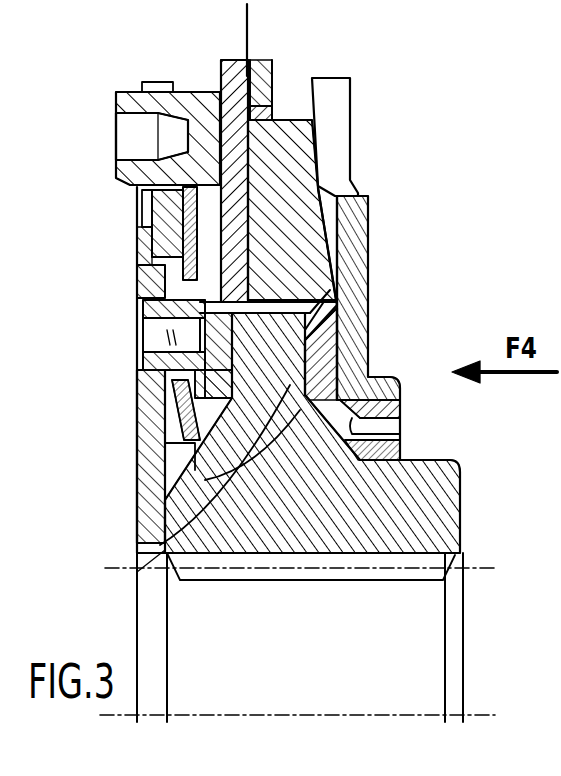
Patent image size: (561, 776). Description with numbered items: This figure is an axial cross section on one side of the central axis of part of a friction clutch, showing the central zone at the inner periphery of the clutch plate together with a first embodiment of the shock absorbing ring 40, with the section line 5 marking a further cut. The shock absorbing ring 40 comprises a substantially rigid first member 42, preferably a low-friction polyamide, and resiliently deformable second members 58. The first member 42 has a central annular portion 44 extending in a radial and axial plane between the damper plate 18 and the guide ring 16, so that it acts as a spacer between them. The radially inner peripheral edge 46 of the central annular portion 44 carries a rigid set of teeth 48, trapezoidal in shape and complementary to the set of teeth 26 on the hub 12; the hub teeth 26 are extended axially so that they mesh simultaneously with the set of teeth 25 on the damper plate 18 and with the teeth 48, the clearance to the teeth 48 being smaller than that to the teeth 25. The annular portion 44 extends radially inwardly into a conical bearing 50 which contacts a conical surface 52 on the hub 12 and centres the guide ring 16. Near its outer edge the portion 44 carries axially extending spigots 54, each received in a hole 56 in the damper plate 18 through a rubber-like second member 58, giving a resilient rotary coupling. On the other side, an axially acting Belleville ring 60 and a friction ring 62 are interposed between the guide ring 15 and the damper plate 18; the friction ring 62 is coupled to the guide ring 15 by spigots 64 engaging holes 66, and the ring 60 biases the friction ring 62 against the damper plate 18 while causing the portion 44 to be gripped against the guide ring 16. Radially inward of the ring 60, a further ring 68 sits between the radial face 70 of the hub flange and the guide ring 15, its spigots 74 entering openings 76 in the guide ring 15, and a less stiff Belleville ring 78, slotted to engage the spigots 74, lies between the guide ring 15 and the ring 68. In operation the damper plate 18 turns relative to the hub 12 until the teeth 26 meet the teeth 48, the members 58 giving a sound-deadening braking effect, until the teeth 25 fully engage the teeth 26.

The section line 5 is at (236, 23).
The hub 12 is at (413, 513).
The guide ring 15 is at (138, 393).
The guide ring 16 is at (352, 242).
The damper plate 18 is at (280, 279).
The set of teeth 25 is at (138, 571).
The set of teeth 26 is at (168, 440).
The shock absorbing ring 40 is at (334, 166).
The first member 42 is at (340, 215).
The central annular portion 44 is at (345, 313).
The radially inner peripheral edge 46 is at (365, 423).
The set of teeth 48 is at (325, 340).
The conical bearing 50 is at (345, 430).
The conical surface 52 is at (355, 440).
The spigots 54 is at (284, 157).
The hole 56 is at (205, 233).
The second member 58 is at (229, 100).
The axially acting resilient ring 60 is at (188, 261).
The friction ring 62 is at (150, 225).
The spigots 64 is at (142, 92).
The holes 66 is at (147, 165).
The further ring 68 is at (170, 458).
The radial face 70 is at (182, 494).
The spigots 74 is at (140, 353).
The openings 76 is at (142, 315).
The axially acting resilient ring 78 is at (140, 420).